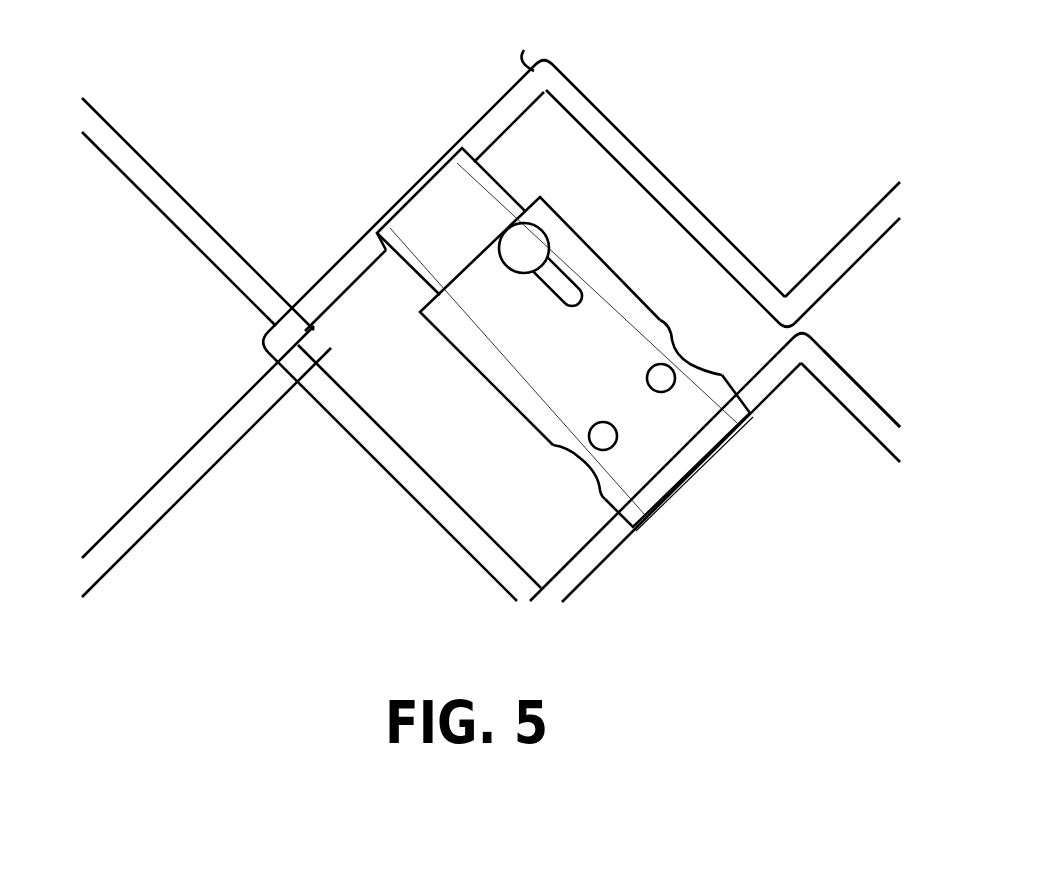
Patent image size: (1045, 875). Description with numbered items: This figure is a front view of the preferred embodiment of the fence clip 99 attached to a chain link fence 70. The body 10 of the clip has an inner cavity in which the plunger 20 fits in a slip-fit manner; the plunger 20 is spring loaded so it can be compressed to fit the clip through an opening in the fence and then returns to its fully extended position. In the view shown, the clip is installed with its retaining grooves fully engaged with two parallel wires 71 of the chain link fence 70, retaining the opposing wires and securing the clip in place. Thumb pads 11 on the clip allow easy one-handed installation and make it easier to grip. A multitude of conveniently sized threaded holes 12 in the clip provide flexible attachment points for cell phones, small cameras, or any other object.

The body 10 is at (667, 440).
The thumb pad 11 is at (704, 370).
The threaded holes 12 is at (663, 380).
The plunger 20 is at (424, 214).
The chain link fence 70 is at (175, 208).
The parallel wires 71 is at (353, 268).
The fence clip preferred embodiment 99 is at (585, 215).